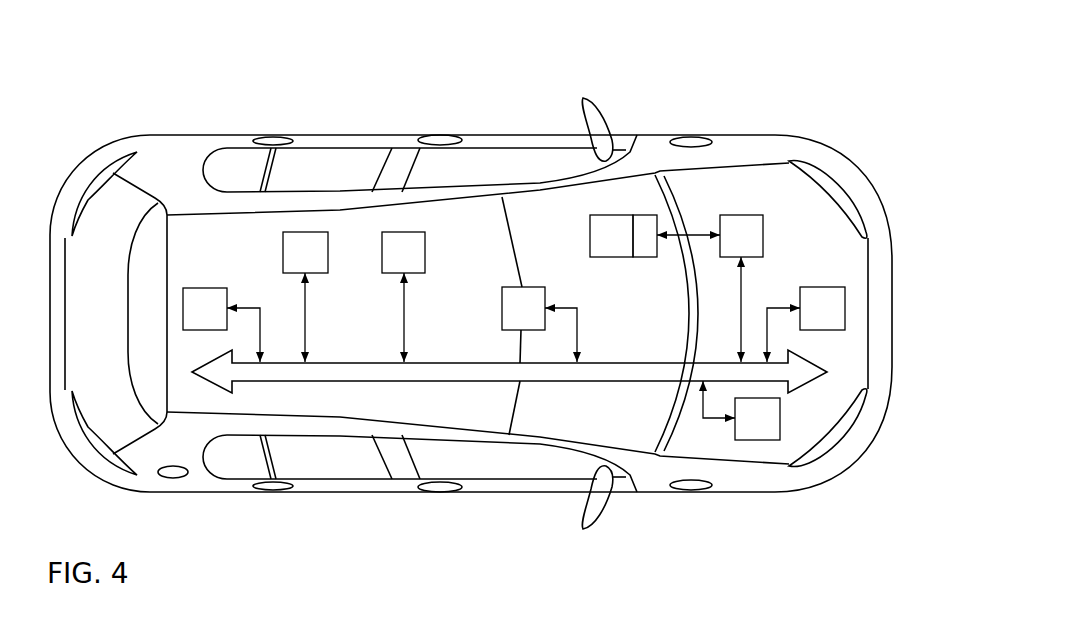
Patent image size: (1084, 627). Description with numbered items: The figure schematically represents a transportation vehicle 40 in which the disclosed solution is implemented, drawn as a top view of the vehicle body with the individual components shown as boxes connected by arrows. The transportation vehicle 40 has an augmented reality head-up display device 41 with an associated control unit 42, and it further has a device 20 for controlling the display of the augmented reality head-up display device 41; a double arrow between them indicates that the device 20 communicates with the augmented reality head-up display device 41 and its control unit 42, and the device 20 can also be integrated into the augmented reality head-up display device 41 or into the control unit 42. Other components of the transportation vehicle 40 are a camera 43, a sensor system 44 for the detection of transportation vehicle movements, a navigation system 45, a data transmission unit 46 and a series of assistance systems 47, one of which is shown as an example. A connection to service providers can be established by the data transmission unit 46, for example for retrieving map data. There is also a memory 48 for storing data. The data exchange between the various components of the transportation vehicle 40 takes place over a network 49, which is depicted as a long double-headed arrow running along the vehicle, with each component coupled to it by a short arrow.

The transportation vehicle 40 is at (753, 135).
The device for controlling a display 20 is at (763, 235).
The augmented reality head-up display device 41 is at (609, 215).
The control unit 42 is at (644, 215).
The camera 43 is at (515, 287).
The sensor system 44 is at (758, 440).
The navigation system 45 is at (292, 232).
The data transmission unit 46 is at (390, 232).
The assistance system 47 is at (823, 288).
The memory 48 is at (203, 288).
The network 49 is at (333, 380).